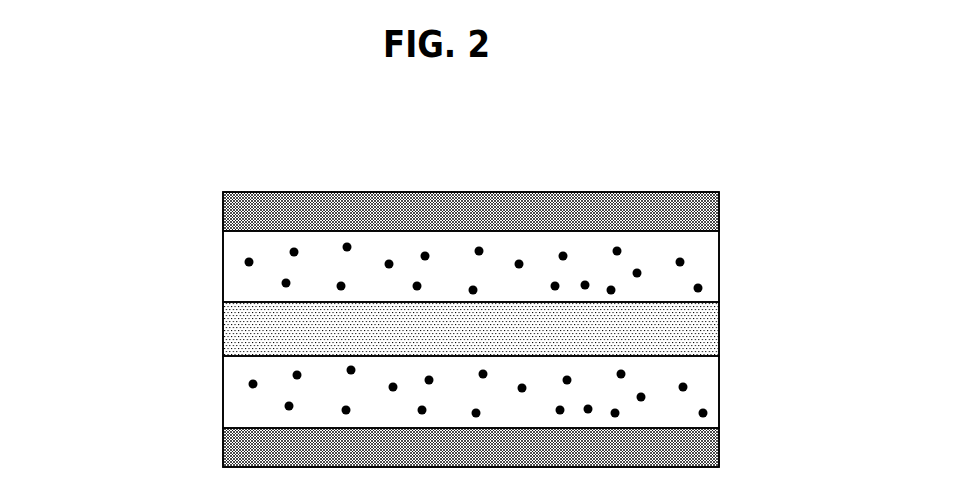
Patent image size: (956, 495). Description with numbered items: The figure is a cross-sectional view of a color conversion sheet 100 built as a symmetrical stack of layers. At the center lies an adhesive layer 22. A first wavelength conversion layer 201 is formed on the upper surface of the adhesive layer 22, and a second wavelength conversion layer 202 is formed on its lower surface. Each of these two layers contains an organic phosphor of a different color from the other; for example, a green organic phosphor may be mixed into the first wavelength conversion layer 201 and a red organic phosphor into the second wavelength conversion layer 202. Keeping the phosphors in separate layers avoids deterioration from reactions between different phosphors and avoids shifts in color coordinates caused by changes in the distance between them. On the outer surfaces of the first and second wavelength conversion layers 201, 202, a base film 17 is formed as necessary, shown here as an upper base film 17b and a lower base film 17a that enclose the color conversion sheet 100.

The color conversion sheet 100 is at (469, 182).
The base film 17 is at (376, 329).
The base film 17a is at (410, 447).
The base film 17b is at (223, 212).
The first wavelength conversion layer 201 is at (720, 261).
The adhesive layer 22 is at (720, 332).
The second wavelength conversion layer 202 is at (720, 398).